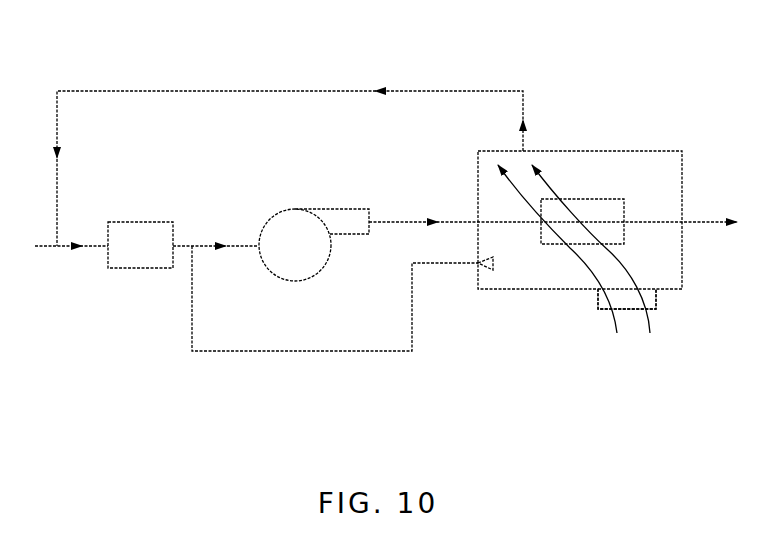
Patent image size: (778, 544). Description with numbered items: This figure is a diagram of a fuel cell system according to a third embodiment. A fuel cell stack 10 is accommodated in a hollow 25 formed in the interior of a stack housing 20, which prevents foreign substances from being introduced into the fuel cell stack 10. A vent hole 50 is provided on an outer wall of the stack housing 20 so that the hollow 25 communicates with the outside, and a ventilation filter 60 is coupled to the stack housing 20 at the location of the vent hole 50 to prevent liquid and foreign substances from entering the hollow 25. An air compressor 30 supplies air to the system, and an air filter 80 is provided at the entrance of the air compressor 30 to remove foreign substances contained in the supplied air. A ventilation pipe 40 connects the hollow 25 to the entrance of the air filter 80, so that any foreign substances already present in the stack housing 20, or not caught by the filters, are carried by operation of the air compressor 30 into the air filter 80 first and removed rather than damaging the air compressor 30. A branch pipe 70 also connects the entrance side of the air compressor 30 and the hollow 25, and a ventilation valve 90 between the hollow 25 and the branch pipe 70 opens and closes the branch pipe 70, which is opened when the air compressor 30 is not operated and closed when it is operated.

The fuel cell stack 10 is at (624, 210).
The stack housing 20 is at (664, 151).
The hollow 25 is at (663, 178).
The air compressor 30 is at (295, 281).
The ventilation pipe 40 is at (274, 91).
The vent hole 50 is at (626, 297).
The ventilation filter 60 is at (608, 310).
The branch pipe 70 is at (300, 351).
The air filter 80 is at (141, 268).
The ventilation valve 90 is at (486, 271).